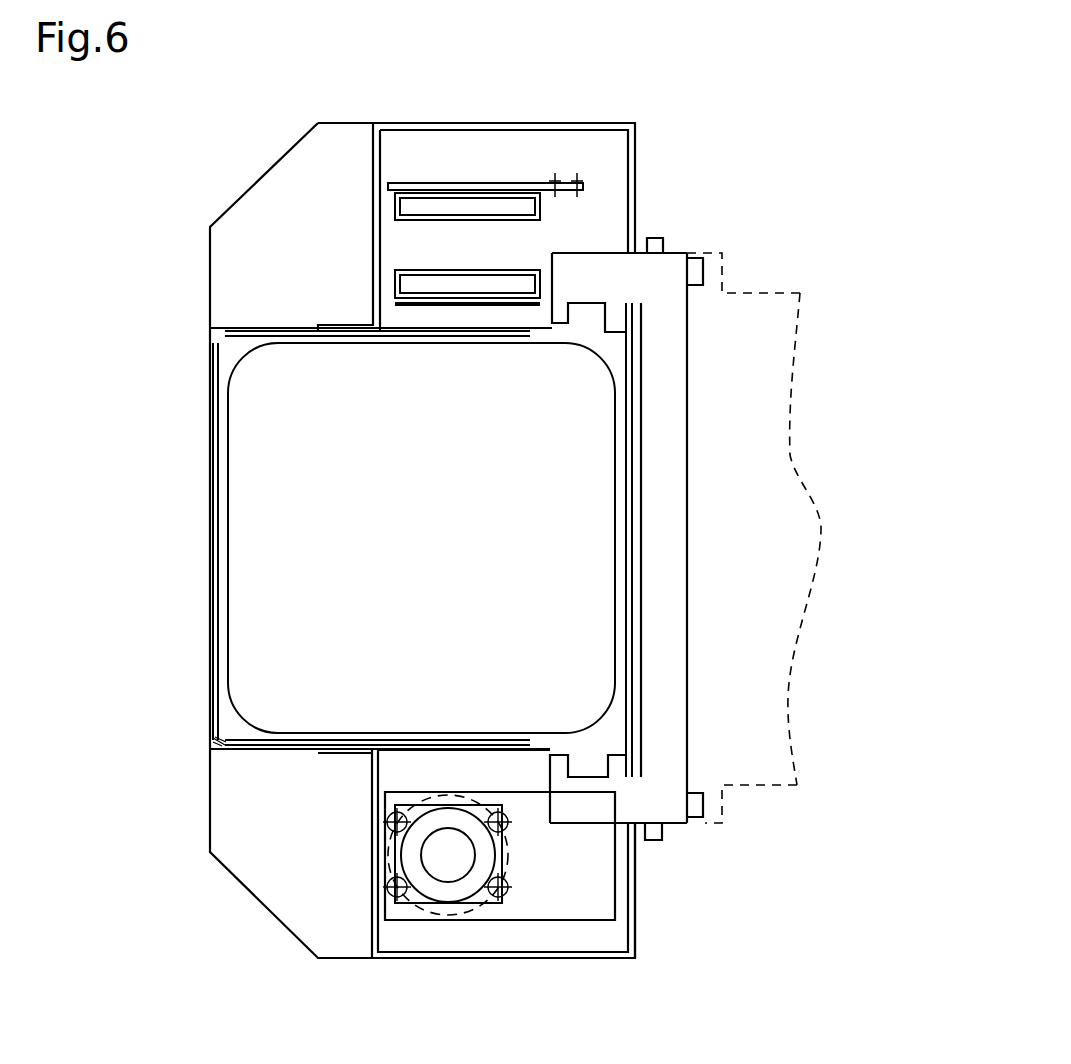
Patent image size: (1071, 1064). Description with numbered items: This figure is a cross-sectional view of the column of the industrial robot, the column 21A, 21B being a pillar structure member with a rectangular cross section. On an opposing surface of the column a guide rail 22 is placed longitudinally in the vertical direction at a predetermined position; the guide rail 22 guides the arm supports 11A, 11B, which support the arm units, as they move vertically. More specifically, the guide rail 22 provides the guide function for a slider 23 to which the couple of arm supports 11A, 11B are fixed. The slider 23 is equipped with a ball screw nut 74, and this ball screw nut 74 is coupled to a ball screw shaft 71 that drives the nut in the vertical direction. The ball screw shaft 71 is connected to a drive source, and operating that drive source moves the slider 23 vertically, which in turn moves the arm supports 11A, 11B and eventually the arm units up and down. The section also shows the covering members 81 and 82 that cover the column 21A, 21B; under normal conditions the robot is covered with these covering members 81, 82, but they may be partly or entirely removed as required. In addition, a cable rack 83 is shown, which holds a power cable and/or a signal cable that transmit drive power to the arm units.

The arm support 11A is at (771, 467).
The arm support 11B is at (817, 538).
The column 21A is at (210, 744).
The column 21B is at (124, 757).
The guide rail 22 is at (588, 322).
The slider 23 is at (665, 810).
The ball screw shaft 71 is at (457, 860).
The ball screw nut 74 is at (428, 888).
The covering member 81 is at (546, 127).
The covering member 82 is at (306, 333).
The cable rack 83 is at (423, 212).